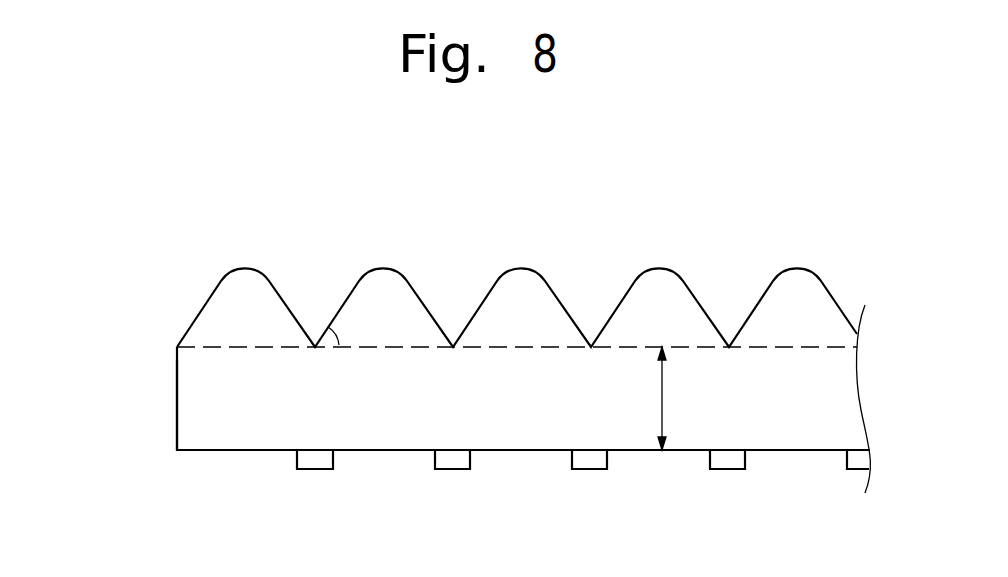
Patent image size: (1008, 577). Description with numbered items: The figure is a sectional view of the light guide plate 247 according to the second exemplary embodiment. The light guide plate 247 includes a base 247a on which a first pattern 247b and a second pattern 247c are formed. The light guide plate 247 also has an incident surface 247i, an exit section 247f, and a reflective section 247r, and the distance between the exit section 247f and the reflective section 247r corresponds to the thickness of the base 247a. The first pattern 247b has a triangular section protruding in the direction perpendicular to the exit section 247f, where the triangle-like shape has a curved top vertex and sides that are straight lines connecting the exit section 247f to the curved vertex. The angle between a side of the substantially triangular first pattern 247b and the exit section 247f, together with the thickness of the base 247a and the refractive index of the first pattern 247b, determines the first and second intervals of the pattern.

The light guide plate 247 is at (233, 248).
The base 247a is at (190, 384).
The first pattern 247b is at (220, 312).
The second pattern 247c is at (313, 460).
The exit section 247f is at (420, 347).
The incident surface 247i is at (177, 424).
The reflective section 247r is at (527, 452).